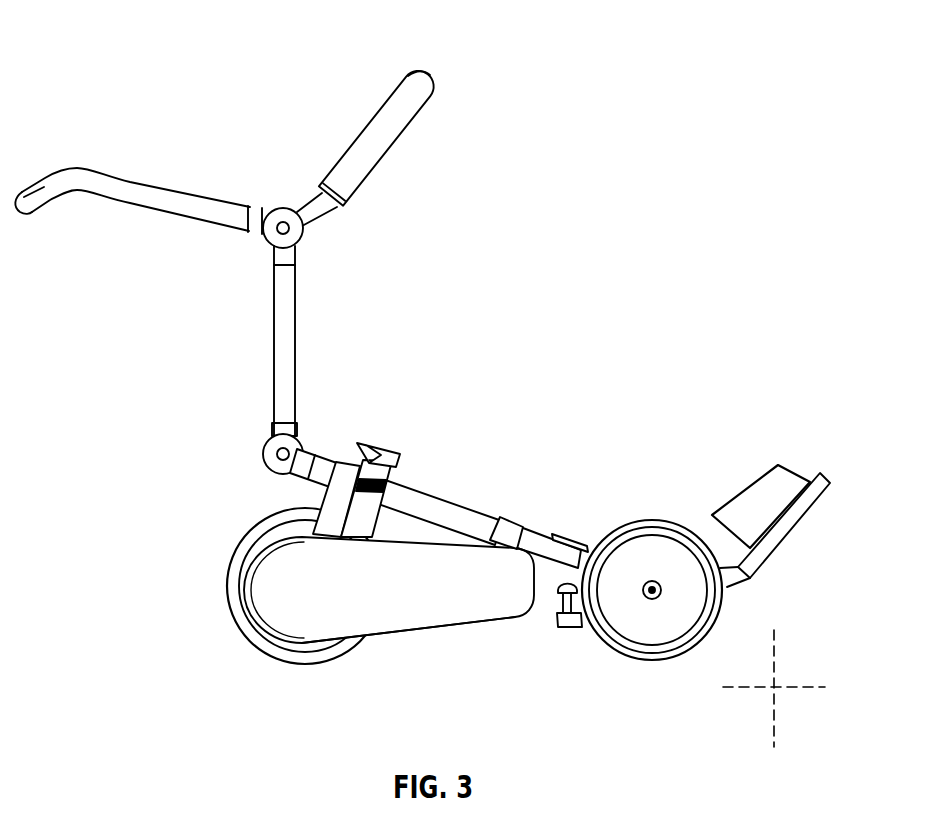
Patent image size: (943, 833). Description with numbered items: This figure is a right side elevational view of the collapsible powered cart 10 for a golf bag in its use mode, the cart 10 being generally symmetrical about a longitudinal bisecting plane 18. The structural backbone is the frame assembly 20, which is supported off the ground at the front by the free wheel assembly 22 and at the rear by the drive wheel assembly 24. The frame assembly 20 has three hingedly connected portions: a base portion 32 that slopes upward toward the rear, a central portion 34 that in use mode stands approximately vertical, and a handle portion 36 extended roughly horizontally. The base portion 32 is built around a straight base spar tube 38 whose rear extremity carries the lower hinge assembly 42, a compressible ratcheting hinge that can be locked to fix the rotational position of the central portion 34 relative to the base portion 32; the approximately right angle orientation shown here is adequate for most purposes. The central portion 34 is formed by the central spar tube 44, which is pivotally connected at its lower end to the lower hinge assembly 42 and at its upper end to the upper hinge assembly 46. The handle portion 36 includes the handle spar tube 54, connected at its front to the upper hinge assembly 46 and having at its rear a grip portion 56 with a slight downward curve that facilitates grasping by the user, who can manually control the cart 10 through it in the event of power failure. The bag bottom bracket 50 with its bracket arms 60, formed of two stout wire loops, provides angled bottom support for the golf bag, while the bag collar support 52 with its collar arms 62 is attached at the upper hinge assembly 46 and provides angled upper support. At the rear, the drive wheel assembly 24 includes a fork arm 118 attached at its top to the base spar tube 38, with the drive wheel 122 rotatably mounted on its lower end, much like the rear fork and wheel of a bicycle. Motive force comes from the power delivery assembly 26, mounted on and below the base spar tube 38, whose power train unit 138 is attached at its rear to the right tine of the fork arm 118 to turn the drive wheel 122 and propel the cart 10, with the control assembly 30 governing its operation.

The collapsible powered cart 10 is at (582, 360).
The bisecting plane 18 is at (793, 674).
The frame assembly 20 is at (278, 390).
The free wheel assembly 22 is at (657, 668).
The drive wheel assembly 24 is at (222, 590).
The power delivery assembly 26 is at (456, 603).
The control assembly 30 is at (385, 463).
The base portion 32 is at (450, 518).
The central portion 34 is at (278, 335).
The handle portion 36 is at (194, 206).
The base spar tube 38 is at (428, 493).
The lower hinge assembly 42 is at (296, 452).
The central spar tube 44 is at (278, 306).
The upper hinge assembly 46 is at (292, 230).
The bag bottom bracket 50 is at (812, 498).
The bag collar support 52 is at (420, 95).
The handle spar tube 54 is at (141, 184).
The grip portion 56 is at (48, 186).
The bracket arms 60 is at (779, 464).
The collar arms 62 is at (408, 76).
The fork arm 118 is at (325, 502).
The drive wheel 122 is at (248, 636).
The power train unit 138 is at (370, 614).